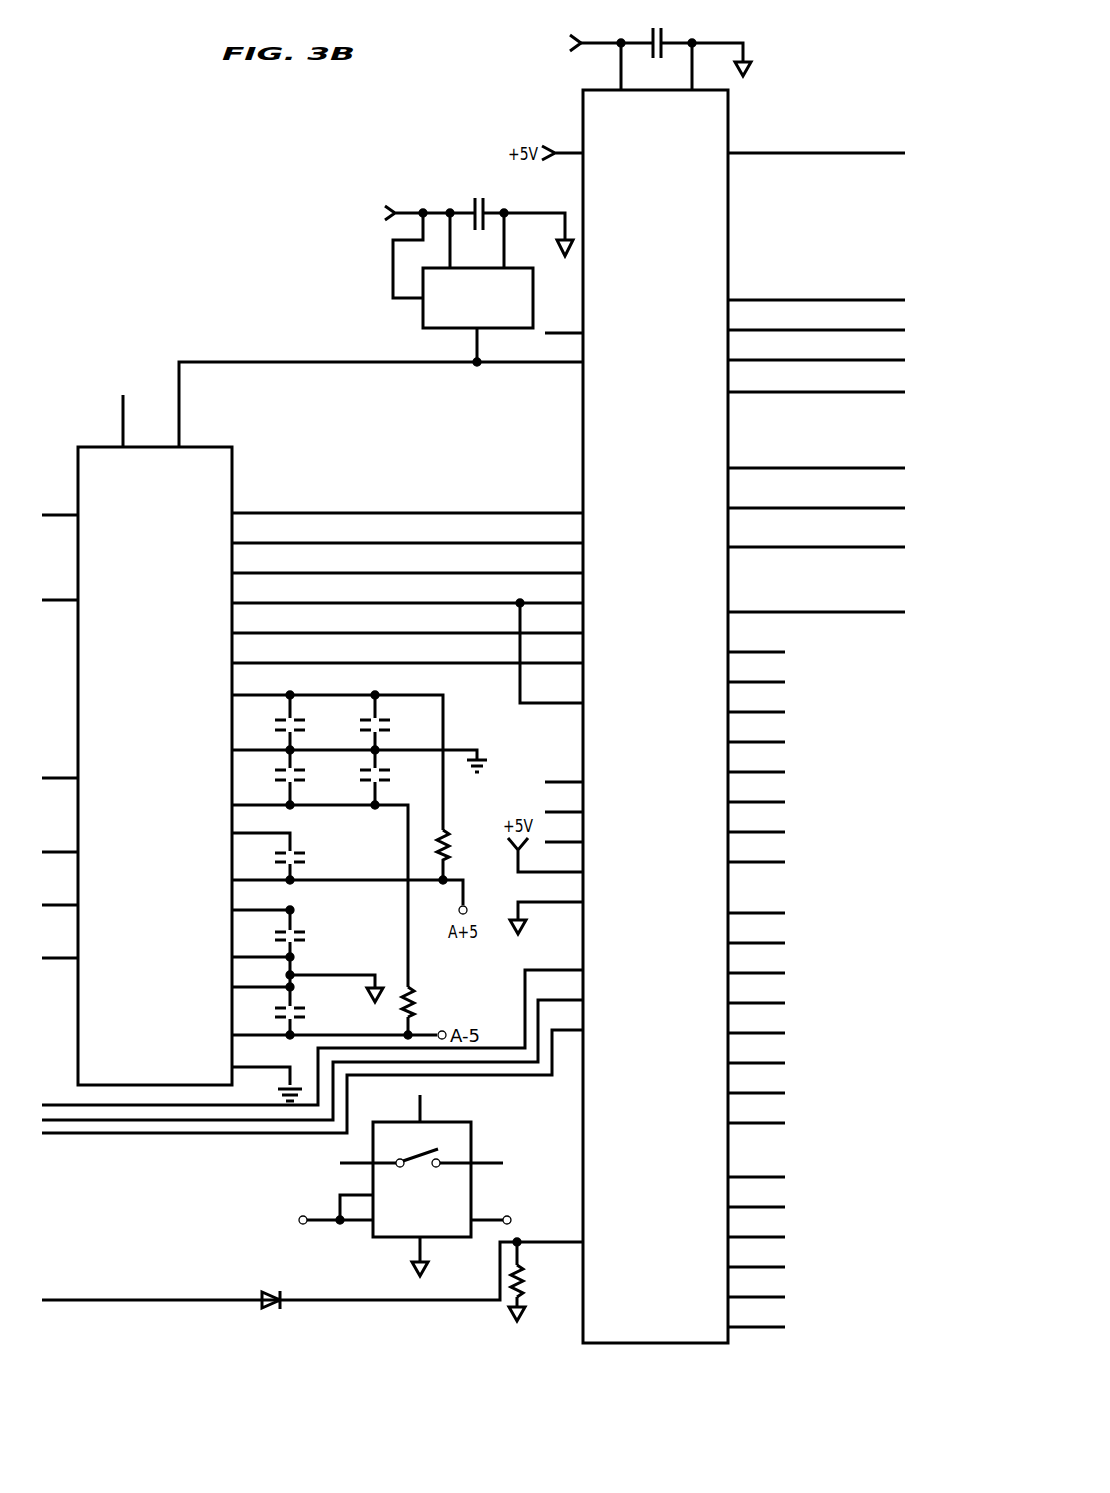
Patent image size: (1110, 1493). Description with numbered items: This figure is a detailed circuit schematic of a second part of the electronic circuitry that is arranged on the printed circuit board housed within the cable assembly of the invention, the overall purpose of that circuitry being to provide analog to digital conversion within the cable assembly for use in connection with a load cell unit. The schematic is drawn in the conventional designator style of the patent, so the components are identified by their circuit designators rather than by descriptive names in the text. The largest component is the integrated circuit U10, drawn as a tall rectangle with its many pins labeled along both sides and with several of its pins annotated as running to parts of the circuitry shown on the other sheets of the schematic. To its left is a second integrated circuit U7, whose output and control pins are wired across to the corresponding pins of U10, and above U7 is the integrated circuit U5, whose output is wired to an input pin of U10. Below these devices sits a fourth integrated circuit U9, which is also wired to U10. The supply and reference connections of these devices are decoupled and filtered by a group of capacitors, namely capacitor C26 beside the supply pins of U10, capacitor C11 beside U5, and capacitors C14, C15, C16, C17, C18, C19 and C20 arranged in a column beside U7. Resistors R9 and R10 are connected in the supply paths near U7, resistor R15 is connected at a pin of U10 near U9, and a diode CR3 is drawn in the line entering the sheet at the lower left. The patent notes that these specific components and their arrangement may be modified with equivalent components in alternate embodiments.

The 68HC11E9-CFN2 microcontroller (PLCC 52) U10 is at (725, 702).
The CS5520-BS analog-to-digital converter U7 is at (148, 754).
The 4.9152 MHz oscillator U5 is at (463, 287).
The DG211 analog switch U9 is at (406, 1185).
The 1.0 uF capacitor C26 is at (643, 47).
The 0.1 uF capacitor C11 is at (463, 222).
The 0.1 uF capacitor C14 is at (306, 723).
The 1.0 uF capacitor C15 is at (391, 723).
The 0.1 uF capacitor C16 is at (306, 773).
The 1.0 uF capacitor C17 is at (391, 773).
The 1.0 uF capacitor C18 is at (306, 855).
The 0.1 uF capacitor C19 is at (306, 935).
The 0.1 uF capacitor C20 is at (306, 1011).
The 10 ohm resistor R9 is at (461, 851).
The 10 ohm resistor R10 is at (426, 1000).
The 4.7K resistor R15 is at (539, 1279).
The DL4148 diode CR3 is at (270, 1300).